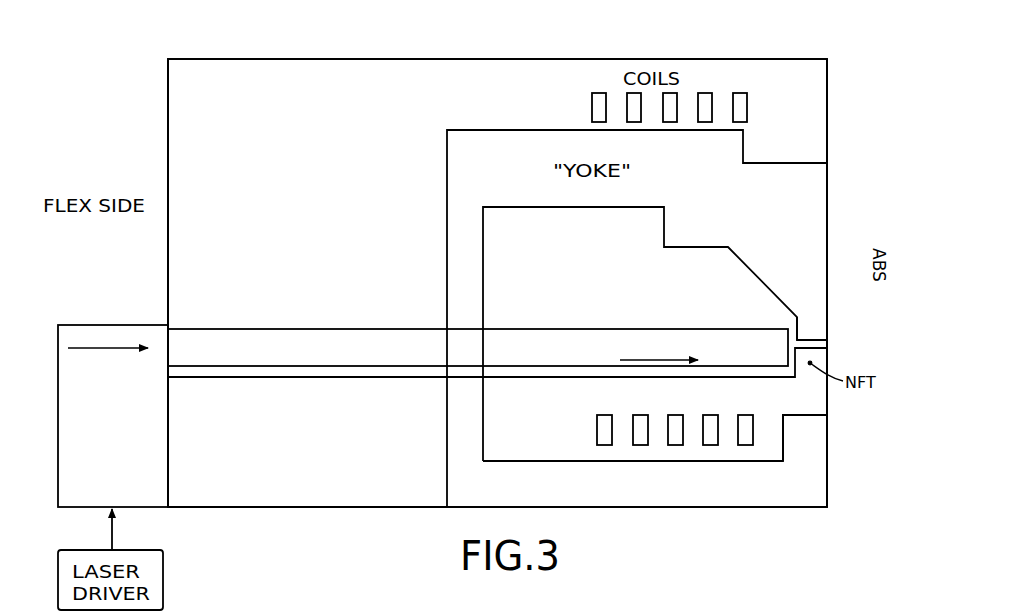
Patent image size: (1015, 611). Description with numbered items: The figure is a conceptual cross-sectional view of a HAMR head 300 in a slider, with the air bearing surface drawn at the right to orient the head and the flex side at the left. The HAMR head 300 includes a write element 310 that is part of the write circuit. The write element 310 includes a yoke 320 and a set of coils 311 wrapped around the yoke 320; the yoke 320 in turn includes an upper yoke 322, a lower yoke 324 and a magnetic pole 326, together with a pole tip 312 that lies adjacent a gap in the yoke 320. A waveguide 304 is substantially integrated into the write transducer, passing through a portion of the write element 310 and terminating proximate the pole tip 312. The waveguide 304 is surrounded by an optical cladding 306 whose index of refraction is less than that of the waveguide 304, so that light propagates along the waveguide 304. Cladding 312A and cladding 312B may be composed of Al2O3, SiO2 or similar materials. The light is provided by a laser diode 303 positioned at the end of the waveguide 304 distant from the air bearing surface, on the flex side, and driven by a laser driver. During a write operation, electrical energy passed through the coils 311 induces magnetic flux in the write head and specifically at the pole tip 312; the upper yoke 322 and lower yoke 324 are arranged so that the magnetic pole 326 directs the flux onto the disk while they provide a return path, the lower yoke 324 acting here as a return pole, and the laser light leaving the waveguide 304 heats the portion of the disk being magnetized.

The HAMR head 300 is at (907, 71).
The laser diode 303 is at (147, 507).
The waveguide 304 is at (307, 360).
The optical cladding 306 is at (370, 470).
The write element 310 is at (760, 490).
The coils 311 is at (707, 102).
The pole tip 312 is at (810, 328).
The cladding 312A is at (182, 273).
The cladding 312B is at (248, 487).
The yoke 320 is at (453, 420).
The upper yoke 322 is at (695, 205).
The lower yoke 324 is at (787, 488).
The magnetic pole 326 is at (810, 328).